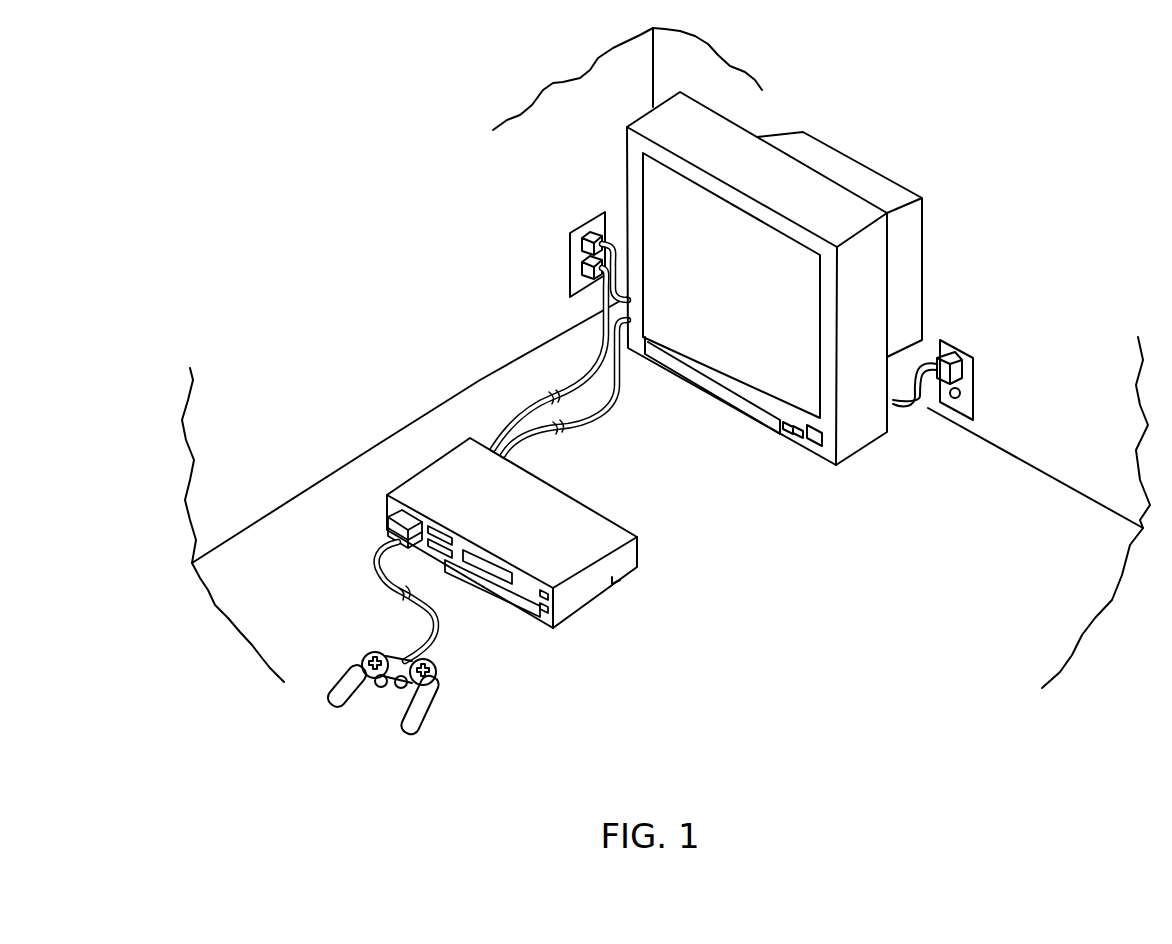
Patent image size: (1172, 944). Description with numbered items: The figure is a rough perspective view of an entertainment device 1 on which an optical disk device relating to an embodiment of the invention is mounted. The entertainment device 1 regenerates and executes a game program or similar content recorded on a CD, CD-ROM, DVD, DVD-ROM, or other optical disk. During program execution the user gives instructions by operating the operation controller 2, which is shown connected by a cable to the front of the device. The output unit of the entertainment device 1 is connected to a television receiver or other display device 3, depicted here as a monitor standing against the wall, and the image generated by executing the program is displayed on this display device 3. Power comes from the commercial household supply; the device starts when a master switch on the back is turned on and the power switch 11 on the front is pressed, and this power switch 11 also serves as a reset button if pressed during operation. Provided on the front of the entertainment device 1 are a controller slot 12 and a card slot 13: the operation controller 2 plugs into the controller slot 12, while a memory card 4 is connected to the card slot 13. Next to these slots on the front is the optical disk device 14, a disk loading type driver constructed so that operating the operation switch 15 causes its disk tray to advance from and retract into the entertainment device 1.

The entertainment device 1 is at (378, 378).
The operation controller 2 is at (347, 683).
The display device 3 is at (833, 156).
The memory card 4 is at (397, 518).
The power switch 11 is at (551, 588).
The controller slot 12 is at (445, 558).
The card slot 13 is at (438, 530).
The optical disk device 14 is at (503, 587).
The operation switch 15 is at (540, 612).